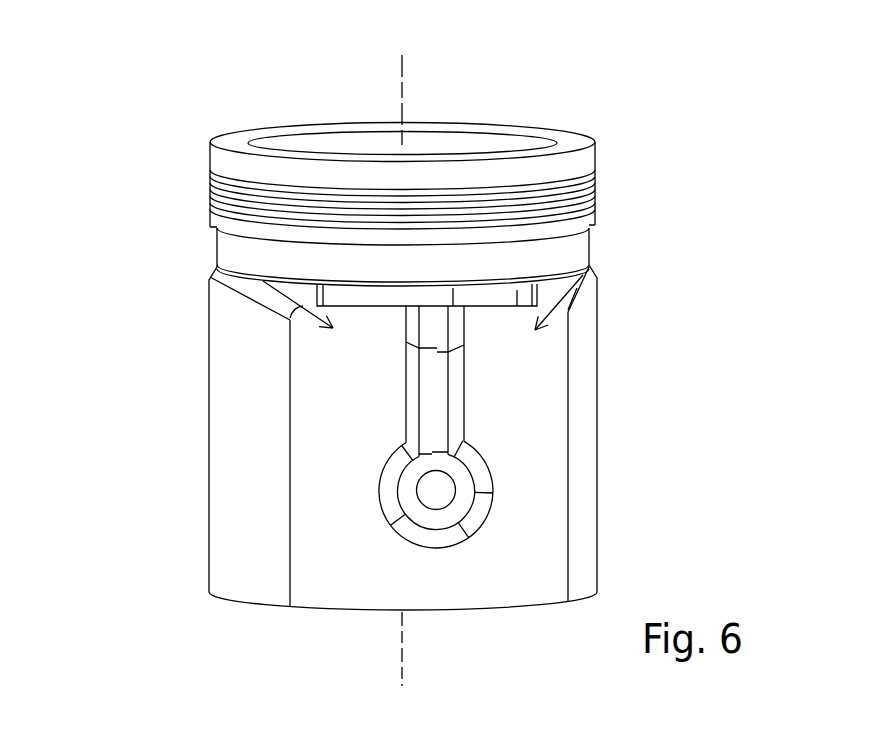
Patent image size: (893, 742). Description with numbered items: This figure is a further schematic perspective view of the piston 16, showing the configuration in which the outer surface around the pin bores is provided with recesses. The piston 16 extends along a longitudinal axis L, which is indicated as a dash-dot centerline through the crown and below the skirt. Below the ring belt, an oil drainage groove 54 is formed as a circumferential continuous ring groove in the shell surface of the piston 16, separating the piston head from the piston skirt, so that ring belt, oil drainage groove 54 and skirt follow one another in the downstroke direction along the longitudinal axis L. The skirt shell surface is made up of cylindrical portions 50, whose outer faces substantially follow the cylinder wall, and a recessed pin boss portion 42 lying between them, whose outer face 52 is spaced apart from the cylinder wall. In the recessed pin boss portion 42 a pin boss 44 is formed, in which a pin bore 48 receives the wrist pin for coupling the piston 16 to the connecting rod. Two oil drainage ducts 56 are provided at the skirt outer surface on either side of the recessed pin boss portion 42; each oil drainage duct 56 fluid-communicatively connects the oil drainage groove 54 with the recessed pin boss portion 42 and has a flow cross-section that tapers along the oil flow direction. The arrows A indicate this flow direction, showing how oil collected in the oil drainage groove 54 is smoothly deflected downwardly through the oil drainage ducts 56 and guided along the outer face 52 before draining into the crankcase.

The piston 16 is at (168, 125).
The recessed pin boss portion 42 is at (335, 562).
The pin boss 44 is at (436, 552).
The pin bore 48 is at (434, 506).
The cylindrical portion 50 is at (250, 502).
The outer face 52 is at (540, 523).
The oil drainage groove 54 is at (208, 242).
The oil drainage duct 56 is at (260, 289).
The arrow A is at (290, 318).
The longitudinal axis L is at (403, 78).